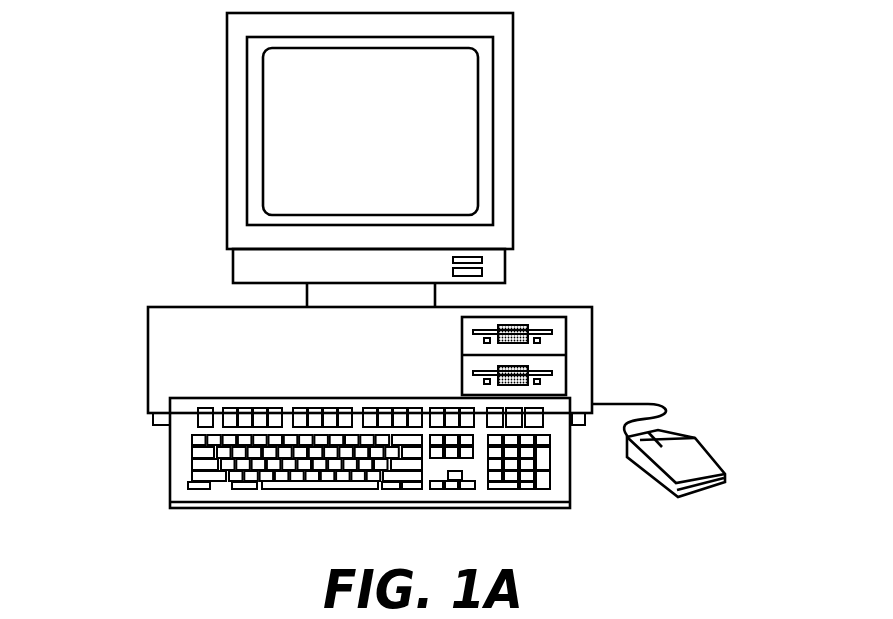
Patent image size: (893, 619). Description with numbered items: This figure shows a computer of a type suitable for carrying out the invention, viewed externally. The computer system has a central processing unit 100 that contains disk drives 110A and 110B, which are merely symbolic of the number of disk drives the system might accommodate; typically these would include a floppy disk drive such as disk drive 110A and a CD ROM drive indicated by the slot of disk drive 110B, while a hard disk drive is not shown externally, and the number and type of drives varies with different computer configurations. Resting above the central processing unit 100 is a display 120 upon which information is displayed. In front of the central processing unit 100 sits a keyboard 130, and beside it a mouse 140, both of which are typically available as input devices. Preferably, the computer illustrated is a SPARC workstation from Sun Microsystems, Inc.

The central processing unit 100 is at (148, 343).
The disk drive 110A is at (462, 340).
The disk drive 110B is at (462, 375).
The display 120 is at (513, 133).
The keyboard 130 is at (170, 457).
The mouse 140 is at (713, 441).